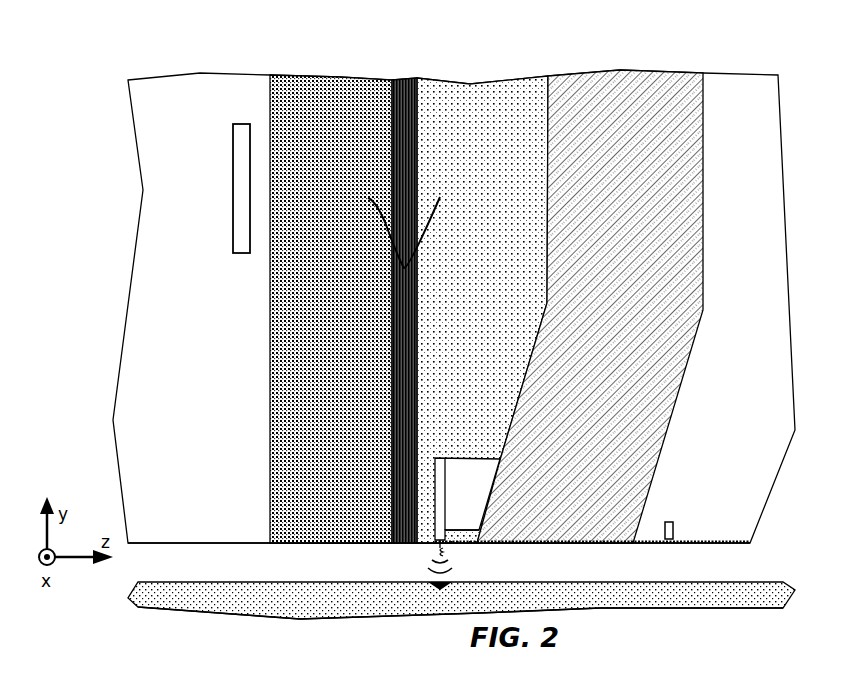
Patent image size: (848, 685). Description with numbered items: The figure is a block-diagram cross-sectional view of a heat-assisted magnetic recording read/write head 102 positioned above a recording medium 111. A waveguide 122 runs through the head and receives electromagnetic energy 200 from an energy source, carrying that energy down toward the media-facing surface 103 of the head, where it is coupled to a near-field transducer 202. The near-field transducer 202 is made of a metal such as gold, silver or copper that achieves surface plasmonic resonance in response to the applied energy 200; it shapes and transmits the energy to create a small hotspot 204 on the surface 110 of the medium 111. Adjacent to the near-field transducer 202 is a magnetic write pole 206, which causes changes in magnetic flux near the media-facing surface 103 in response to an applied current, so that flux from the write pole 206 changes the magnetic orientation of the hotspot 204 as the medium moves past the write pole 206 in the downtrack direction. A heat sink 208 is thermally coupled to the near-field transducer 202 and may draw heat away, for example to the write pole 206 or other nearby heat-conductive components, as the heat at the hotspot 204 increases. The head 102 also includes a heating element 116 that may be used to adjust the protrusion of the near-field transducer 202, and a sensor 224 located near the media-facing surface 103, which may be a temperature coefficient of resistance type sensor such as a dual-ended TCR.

The read/write head 102 is at (172, 46).
The media-facing surface 103 is at (750, 543).
The surface of medium 110 is at (592, 595).
The medium 111 is at (617, 592).
The heating element 116 is at (233, 213).
The waveguide 122 is at (541, 50).
The electromagnetic energy 200 is at (387, 226).
The near-field transducer 202 is at (437, 545).
The hotspot 204 is at (440, 586).
The magnetic write pole 206 is at (641, 72).
The heat sink 208 is at (462, 515).
The sensor 224 is at (669, 522).